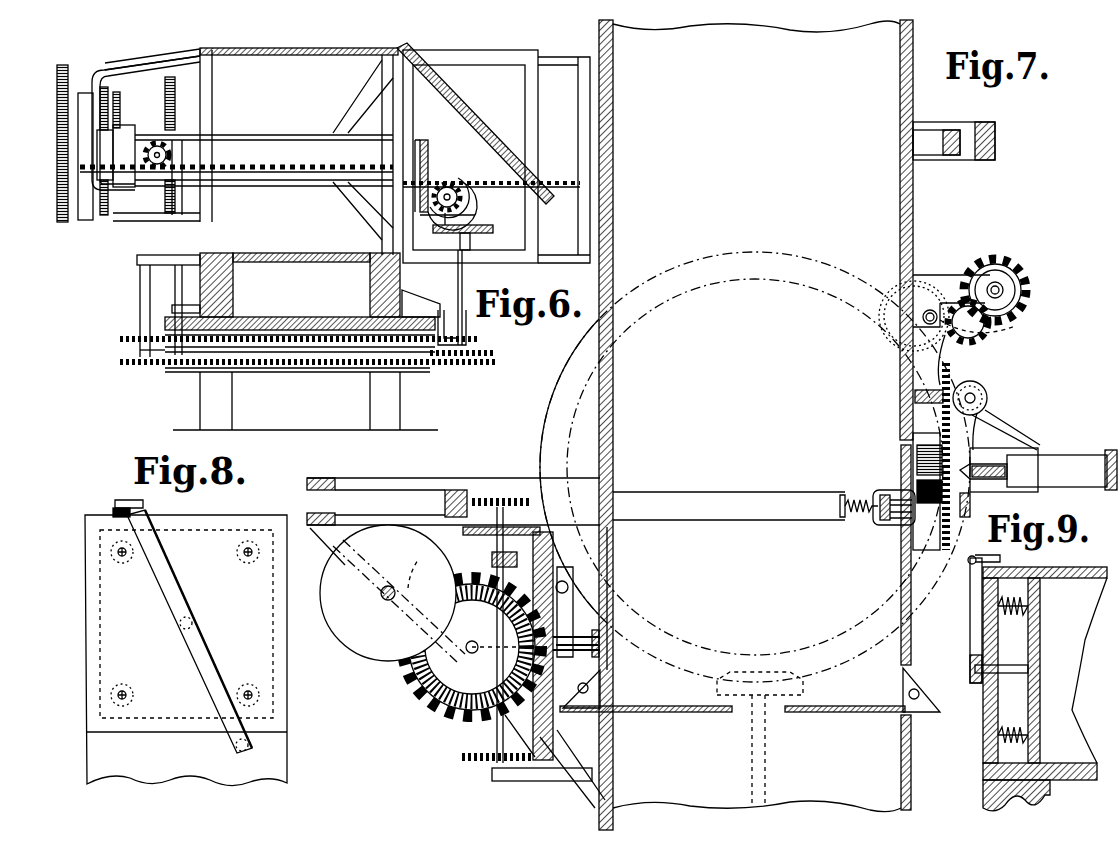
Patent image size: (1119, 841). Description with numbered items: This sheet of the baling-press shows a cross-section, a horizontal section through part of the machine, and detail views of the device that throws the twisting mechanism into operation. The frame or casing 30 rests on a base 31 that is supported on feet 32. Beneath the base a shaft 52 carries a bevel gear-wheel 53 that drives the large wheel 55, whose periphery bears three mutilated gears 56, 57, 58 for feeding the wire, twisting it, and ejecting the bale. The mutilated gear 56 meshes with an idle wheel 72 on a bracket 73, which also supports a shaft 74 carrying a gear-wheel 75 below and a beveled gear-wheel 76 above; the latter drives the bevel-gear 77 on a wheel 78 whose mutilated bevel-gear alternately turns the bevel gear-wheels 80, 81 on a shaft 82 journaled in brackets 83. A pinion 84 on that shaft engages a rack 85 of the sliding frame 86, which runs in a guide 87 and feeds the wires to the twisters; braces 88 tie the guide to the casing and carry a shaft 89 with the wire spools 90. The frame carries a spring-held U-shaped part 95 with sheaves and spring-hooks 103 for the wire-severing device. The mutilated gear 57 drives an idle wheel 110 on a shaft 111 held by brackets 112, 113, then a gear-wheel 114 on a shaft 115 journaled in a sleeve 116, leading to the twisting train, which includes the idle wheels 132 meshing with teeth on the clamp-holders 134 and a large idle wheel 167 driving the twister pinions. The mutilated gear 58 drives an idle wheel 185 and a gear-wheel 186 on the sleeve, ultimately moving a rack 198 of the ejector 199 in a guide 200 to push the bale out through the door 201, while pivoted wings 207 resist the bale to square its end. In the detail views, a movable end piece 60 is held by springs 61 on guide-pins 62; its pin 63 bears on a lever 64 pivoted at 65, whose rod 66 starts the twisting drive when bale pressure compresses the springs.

In FIG. 6, the frame or casing 30 is at (330, 49).
In FIG. 7, the frame or casing 30 is at (601, 46).
In FIG. 6, the base 31 is at (380, 281).
In FIG. 6, the feet 32 is at (215, 425).
In FIG. 7, the shaft 52 is at (762, 758).
In FIG. 7, the bevel gear-wheel 53 is at (810, 672).
In FIG. 7, the large wheel 55 is at (542, 432).
In FIG. 6, the mutilated gear 56 is at (258, 350).
In FIG. 6, the mutilated gear 57 is at (322, 362).
In FIG. 6, the mutilated gear 58 is at (311, 336).
In FIG. 8, the end piece 60 is at (246, 668).
In FIG. 9, the end piece 60 is at (1033, 630).
In FIG. 8, the springs 61 is at (237, 552).
In FIG. 9, the springs 61 is at (1030, 735).
In FIG. 8, the guide-pins 62 is at (135, 690).
In FIG. 9, the guide-pins 62 is at (1002, 737).
In FIG. 8, the pin 63 is at (192, 622).
In FIG. 9, the pin 63 is at (1005, 676).
In FIG. 8, the lever 64 is at (172, 593).
In FIG. 9, the lever 64 is at (970, 642).
In FIG. 8, the pivot 65 is at (115, 508).
In FIG. 9, the pivot 65 is at (970, 568).
In FIG. 8, the rod 66 is at (236, 747).
In FIG. 6, the idle wheel 72 is at (446, 357).
In FIG. 7, the idle wheel 72 is at (605, 560).
In FIG. 6, the bracket 73 is at (420, 318).
In FIG. 7, the bracket 73 is at (600, 612).
In FIG. 6, the shaft 74 is at (463, 328).
In FIG. 7, the shaft 74 is at (468, 653).
In FIG. 6, the gear-wheel 75 is at (492, 358).
In FIG. 7, the gear-wheel 75 is at (432, 705).
In FIG. 6, the beveled gear-wheel 76 is at (495, 210).
In FIG. 6, the bevel-gear 77 is at (447, 186).
In FIG. 6, the wheel 78 is at (430, 134).
In FIG. 7, the wheel 78 is at (560, 722).
In FIG. 7, the bevel gear-wheel 80 is at (480, 765).
In FIG. 6, the bevel gear-wheel 81 is at (470, 190).
In FIG. 7, the bevel gear-wheel 81 is at (530, 525).
In FIG. 7, the shaft 82 is at (497, 738).
In FIG. 7, the brackets 83 is at (528, 781).
In FIG. 6, the pinion 84 is at (462, 190).
In FIG. 6, the rack 85 is at (560, 176).
In FIG. 6, the sliding frame 86 is at (88, 74).
In FIG. 7, the sliding frame 86 is at (576, 501).
In FIG. 6, the guide 87 is at (505, 57).
In FIG. 7, the guide 87 is at (452, 490).
In FIG. 7, the braces 88 is at (328, 535).
In FIG. 7, the shaft 89 is at (391, 588).
In FIG. 7, the spools 90 is at (392, 593).
In FIG. 7, the U-shaped part 95 is at (870, 520).
In FIG. 7, the spring-hooks 103 is at (897, 528).
In FIG. 6, the idle wheel 110 is at (184, 368).
In FIG. 7, the idle wheel 110 is at (1002, 334).
In FIG. 6, the shaft 111 is at (137, 258).
In FIG. 7, the shaft 111 is at (925, 322).
In FIG. 6, the bracket 112 is at (190, 308).
In FIG. 6, the bracket 113 is at (205, 257).
In FIG. 6, the gear-wheel 114 is at (126, 366).
In FIG. 7, the gear-wheel 114 is at (998, 278).
In FIG. 6, the shaft 115 is at (140, 350).
In FIG. 6, the sleeve 116 is at (140, 308).
In FIG. 7, the idle wheel 132 is at (952, 383).
In FIG. 7, the clamp-holders 134 is at (925, 455).
In FIG. 6, the large idle wheel 167 is at (62, 172).
In FIG. 6, the idle wheel 185 is at (172, 341).
In FIG. 7, the idle wheel 185 is at (950, 330).
In FIG. 6, the gear-wheel 186 is at (120, 341).
In FIG. 7, the gear-wheel 186 is at (975, 268).
In FIG. 6, the rack 198 is at (289, 176).
In FIG. 6, the ejector 199 is at (386, 98).
In FIG. 7, the ejector 199 is at (901, 192).
In FIG. 6, the guide 200 is at (125, 136).
In FIG. 7, the guide 200 is at (987, 113).
In FIG. 6, the door 201 is at (433, 80).
In FIG. 7, the pivoted wings 207 is at (700, 713).